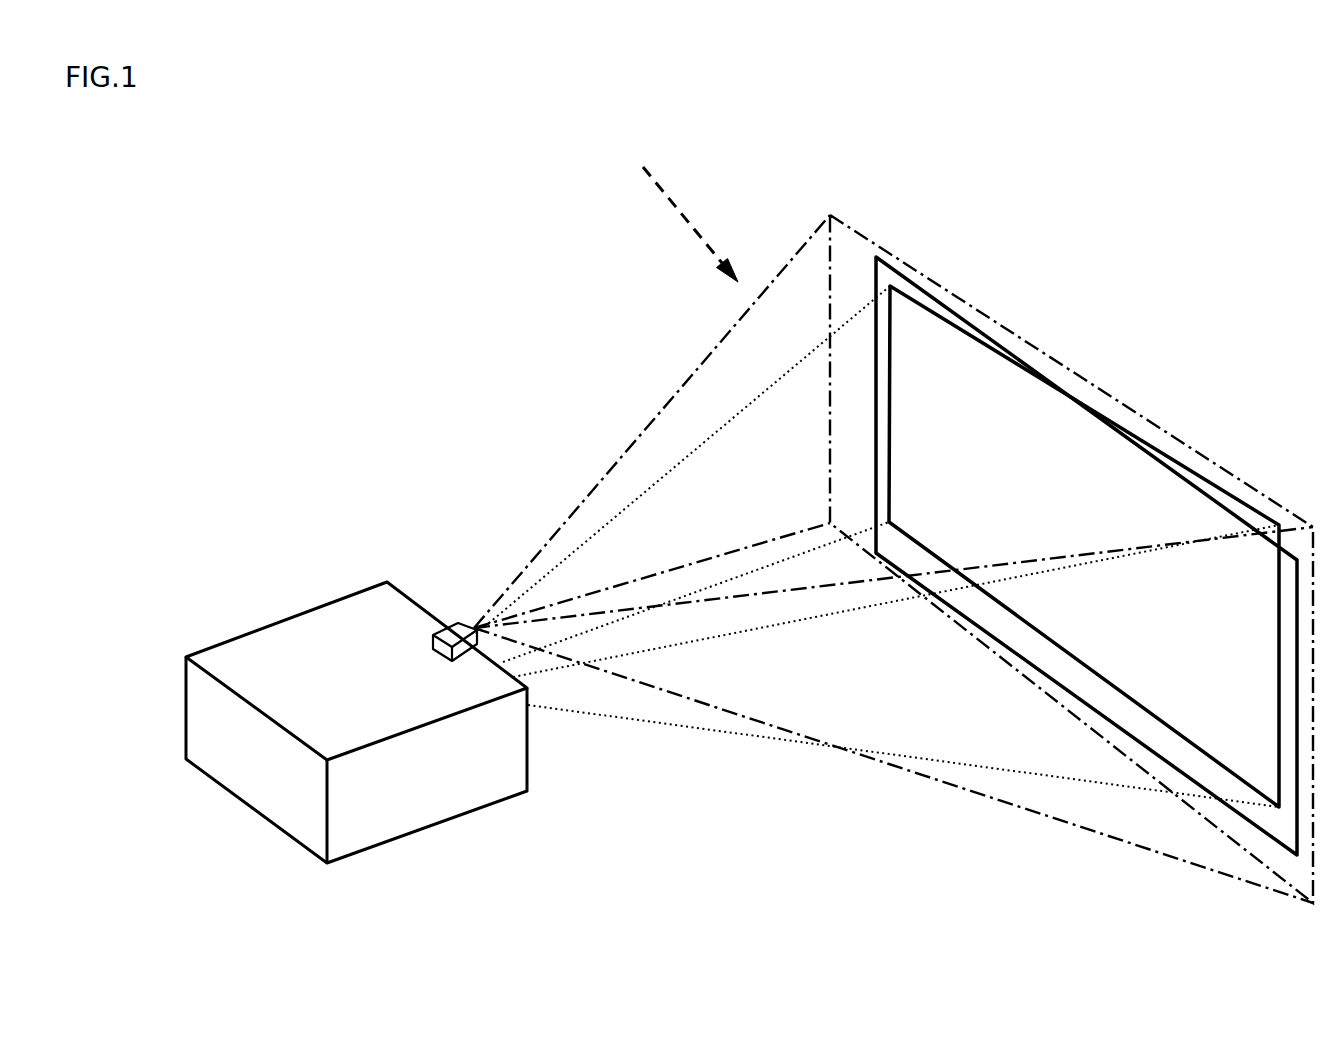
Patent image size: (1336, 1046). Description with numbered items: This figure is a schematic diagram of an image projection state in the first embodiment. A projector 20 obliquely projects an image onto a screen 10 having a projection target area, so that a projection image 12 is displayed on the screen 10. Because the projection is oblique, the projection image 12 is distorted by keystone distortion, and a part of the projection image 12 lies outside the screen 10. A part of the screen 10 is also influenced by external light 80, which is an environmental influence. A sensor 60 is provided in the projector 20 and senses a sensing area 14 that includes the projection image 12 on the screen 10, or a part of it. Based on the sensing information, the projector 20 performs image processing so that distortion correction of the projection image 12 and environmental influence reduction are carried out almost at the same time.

The screen 10 is at (896, 262).
The projection image 12 is at (1238, 503).
The sensing area 14 is at (1184, 443).
The projector 20 is at (500, 778).
The sensor 60 is at (451, 622).
The external light 80 is at (660, 186).